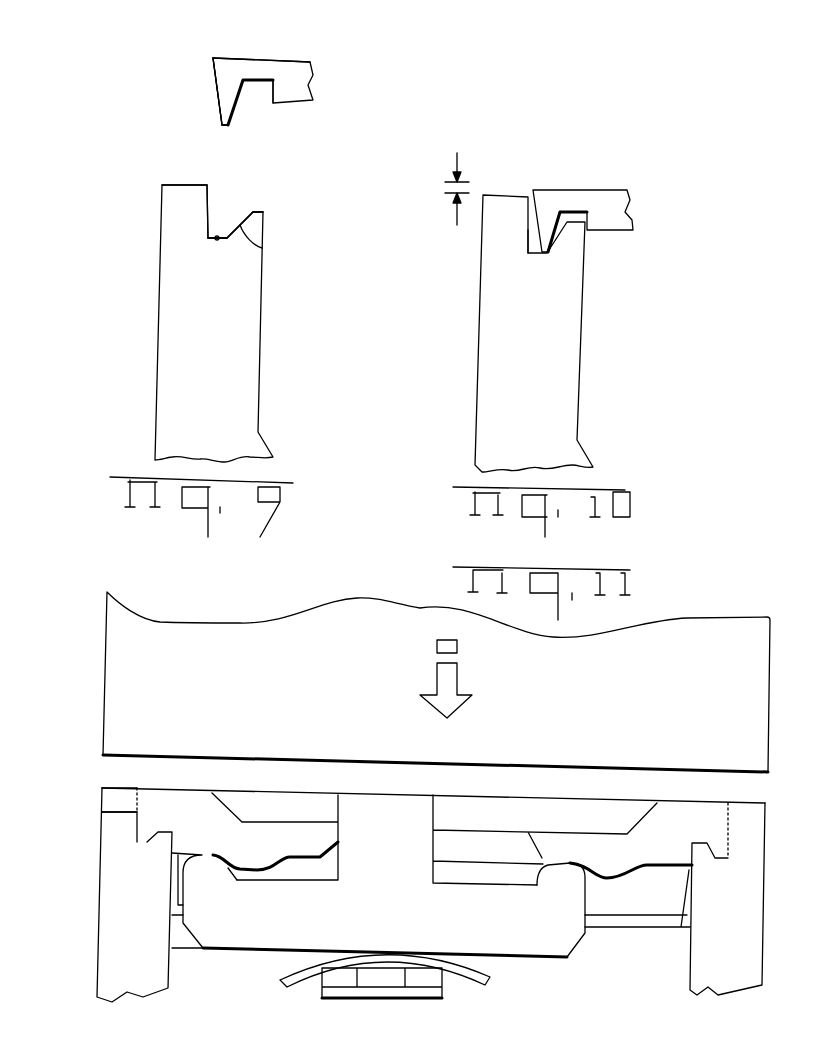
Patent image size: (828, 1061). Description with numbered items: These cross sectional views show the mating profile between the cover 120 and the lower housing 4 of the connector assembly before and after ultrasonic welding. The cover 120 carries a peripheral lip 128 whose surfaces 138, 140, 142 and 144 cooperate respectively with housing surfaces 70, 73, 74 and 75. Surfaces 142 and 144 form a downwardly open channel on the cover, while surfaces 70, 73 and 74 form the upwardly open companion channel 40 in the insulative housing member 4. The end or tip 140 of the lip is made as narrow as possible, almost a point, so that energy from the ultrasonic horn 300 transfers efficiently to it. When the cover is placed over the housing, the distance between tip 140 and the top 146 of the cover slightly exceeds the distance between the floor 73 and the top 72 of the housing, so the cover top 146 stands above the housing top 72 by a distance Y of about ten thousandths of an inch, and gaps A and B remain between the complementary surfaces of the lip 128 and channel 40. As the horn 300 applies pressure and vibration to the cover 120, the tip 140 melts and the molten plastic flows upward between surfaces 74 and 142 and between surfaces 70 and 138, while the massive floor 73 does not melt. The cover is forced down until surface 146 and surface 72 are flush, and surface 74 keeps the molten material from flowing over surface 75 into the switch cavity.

In FIG. 9, the lower housing 4 is at (147, 353).
In FIG. 10, the lower housing 4 is at (534, 333).
In FIG. 11, the lower housing 4 is at (98, 878).
In FIG. 9, the channel 40 is at (235, 200).
In FIG. 9, the surface 70 is at (215, 193).
In FIG. 9, the top of the housing 72 is at (167, 183).
In FIG. 11, the top of the housing 72 is at (102, 787).
In FIG. 9, the floor 73 is at (220, 252).
In FIG. 9, the surface 74 is at (262, 248).
In FIG. 9, the surface 75 is at (263, 207).
In FIG. 9, the cover 120 is at (328, 68).
In FIG. 10, the cover 120 is at (583, 221).
In FIG. 9, the peripheral lip 128 is at (165, 100).
In FIG. 9, the surface 138 is at (213, 88).
In FIG. 11, the surface 138 is at (105, 812).
In FIG. 9, the tip 140 is at (222, 128).
In FIG. 9, the surface 142 is at (247, 113).
In FIG. 9, the surface 144 is at (263, 100).
In FIG. 9, the top of the cover 146 is at (250, 58).
In FIG. 11, the top of the cover 146 is at (166, 788).
In FIG. 11, the ultrasonic horn 300 is at (680, 620).
In FIG. 10, the gap A is at (560, 238).
In FIG. 10, the gap B is at (533, 238).
In FIG. 10, the distance Y is at (457, 171).